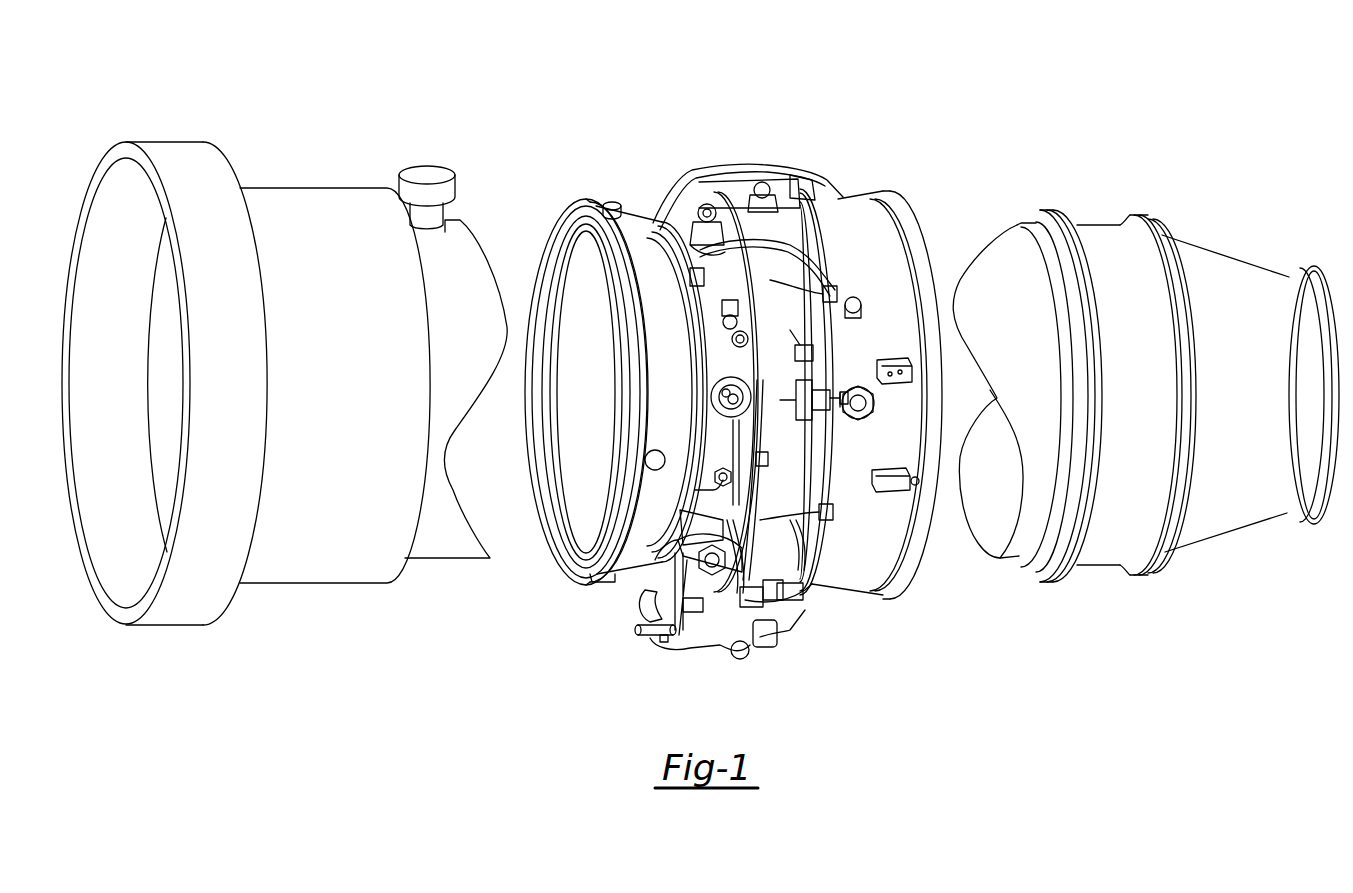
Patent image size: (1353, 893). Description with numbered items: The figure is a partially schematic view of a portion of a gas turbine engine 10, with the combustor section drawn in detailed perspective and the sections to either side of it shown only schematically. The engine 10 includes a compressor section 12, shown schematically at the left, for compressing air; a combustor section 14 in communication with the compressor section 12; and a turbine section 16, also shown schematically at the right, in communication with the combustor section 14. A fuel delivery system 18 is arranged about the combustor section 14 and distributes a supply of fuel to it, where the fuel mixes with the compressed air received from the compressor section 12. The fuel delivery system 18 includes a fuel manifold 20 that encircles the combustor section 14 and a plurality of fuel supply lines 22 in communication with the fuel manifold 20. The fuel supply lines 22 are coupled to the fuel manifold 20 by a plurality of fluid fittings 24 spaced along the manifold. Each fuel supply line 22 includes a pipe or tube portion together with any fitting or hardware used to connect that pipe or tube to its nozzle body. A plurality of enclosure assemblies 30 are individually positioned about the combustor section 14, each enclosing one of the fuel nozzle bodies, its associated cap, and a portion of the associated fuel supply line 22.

The gas turbine engine 10 is at (1108, 140).
The compressor section 12 is at (318, 160).
The combustor section 14 is at (657, 178).
The turbine section 16 is at (1248, 227).
The fuel delivery system 18 is at (781, 145).
The fuel manifold 20 is at (835, 193).
The fuel supply lines 22 is at (827, 397).
The fluid fittings 24 is at (825, 293).
The enclosure assemblies 30 is at (730, 323).